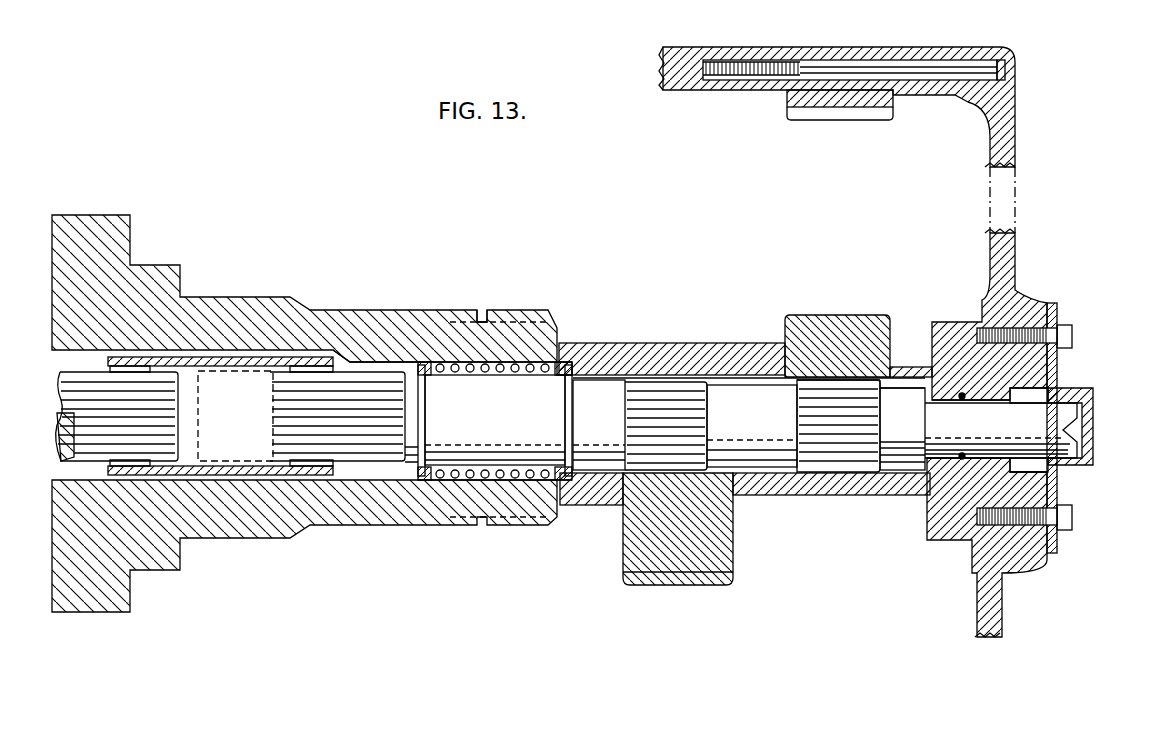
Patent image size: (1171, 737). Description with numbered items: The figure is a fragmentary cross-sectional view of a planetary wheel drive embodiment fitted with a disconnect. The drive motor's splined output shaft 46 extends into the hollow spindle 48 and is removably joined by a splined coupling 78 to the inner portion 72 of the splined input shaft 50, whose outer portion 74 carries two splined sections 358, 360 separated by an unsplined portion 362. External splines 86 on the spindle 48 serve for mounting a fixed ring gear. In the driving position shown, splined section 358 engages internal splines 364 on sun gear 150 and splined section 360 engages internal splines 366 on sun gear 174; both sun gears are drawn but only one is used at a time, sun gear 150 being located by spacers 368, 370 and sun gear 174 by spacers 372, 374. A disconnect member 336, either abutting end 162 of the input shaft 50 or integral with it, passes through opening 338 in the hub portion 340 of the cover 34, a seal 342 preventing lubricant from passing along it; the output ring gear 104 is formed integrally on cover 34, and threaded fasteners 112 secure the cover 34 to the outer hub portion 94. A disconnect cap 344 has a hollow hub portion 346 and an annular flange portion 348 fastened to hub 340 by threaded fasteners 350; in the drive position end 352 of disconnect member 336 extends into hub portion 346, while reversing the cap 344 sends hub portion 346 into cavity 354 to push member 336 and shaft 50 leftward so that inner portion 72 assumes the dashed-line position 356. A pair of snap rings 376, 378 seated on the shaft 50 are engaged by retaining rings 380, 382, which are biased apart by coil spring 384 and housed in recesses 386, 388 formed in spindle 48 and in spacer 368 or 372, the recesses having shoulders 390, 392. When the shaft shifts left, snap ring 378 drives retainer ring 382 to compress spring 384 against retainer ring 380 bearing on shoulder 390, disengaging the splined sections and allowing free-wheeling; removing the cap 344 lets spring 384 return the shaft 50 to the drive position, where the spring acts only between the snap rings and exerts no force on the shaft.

The outer hub portion 94 is at (688, 57).
The threaded fasteners 112 is at (1007, 73).
The output ring gear 104 is at (875, 138).
The cover 34 is at (1015, 262).
The shoulder 390 is at (403, 358).
The external splines 86 is at (500, 318).
The recess 388 is at (561, 364).
The shoulder 392 is at (588, 360).
The spacer 372 is at (655, 352).
The splined section 358 is at (678, 388).
The sun gear 174 is at (881, 263).
The spacer 374 is at (891, 384).
The disconnect cap 344 is at (1081, 371).
The splined output shaft 46 is at (58, 408).
The inner portion 72 is at (270, 398).
The dashed line position 356 is at (200, 416).
The snap ring 376 is at (423, 422).
The splined input shaft 50 is at (545, 389).
The snap ring 378 is at (565, 432).
The outer portion 74 is at (777, 389).
The internal splines 366 is at (803, 381).
The end 162 is at (923, 412).
The disconnect member 336 is at (975, 428).
The end 352 is at (1068, 408).
The hollow hub portion 346 is at (1097, 402).
The opening 338 is at (962, 392).
The internal splines 364 is at (707, 470).
The splined coupling 78 is at (218, 477).
The hollow spindle 48 is at (335, 541).
The retaining ring 380 is at (427, 478).
The recess 386 is at (465, 480).
The coil spring 384 is at (500, 480).
The retaining ring 382 is at (560, 480).
The spacer 368 is at (590, 495).
The unsplined portion 362 is at (772, 453).
The spacer 370 is at (827, 487).
The splined section 360 is at (852, 462).
The hub portion 340 is at (928, 527).
The seal 342 is at (963, 460).
The cavity 354 is at (1032, 462).
The threaded fasteners 350 is at (1072, 516).
The annular flange portion 348 is at (1057, 542).
The sun gear 150 is at (673, 586).